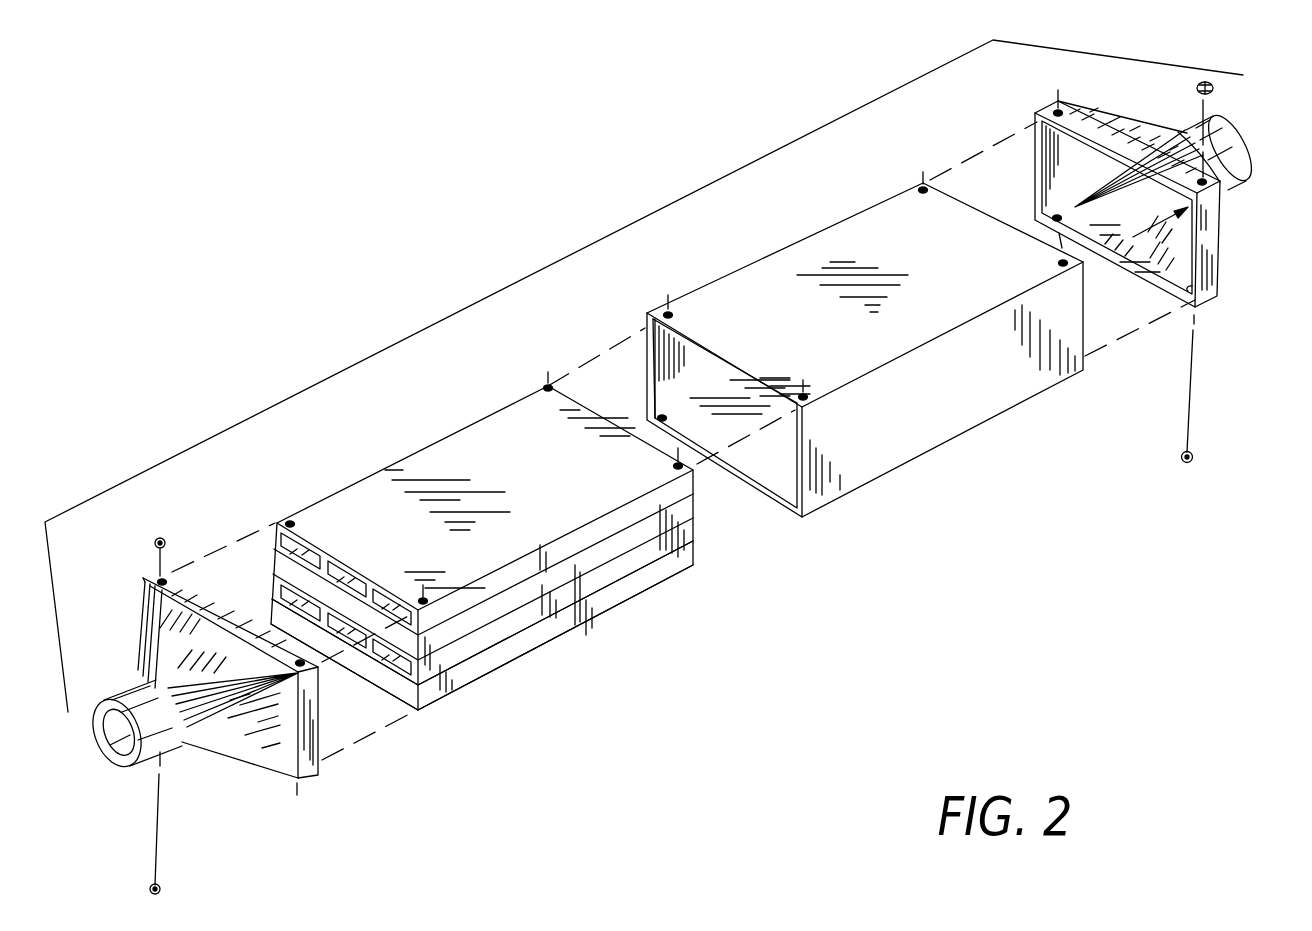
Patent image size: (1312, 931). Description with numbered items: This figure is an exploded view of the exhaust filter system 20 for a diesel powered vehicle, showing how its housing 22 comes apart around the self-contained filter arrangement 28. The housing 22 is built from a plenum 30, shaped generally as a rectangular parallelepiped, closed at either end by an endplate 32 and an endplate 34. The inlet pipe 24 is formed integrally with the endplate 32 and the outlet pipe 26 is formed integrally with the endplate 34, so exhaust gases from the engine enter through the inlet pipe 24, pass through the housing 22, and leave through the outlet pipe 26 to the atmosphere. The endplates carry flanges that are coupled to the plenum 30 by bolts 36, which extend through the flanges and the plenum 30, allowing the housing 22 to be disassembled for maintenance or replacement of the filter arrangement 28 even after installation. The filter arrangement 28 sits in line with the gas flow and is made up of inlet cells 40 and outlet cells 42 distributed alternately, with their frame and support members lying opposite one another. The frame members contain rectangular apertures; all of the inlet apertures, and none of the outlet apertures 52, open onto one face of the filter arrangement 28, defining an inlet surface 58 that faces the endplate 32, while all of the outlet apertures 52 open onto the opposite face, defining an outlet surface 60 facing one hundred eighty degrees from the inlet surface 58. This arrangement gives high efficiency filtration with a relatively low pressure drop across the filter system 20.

The exhaust filter system 20 is at (482, 304).
The housing 22 is at (895, 538).
The inlet pipe 24 is at (127, 698).
The outlet pipe 26 is at (1238, 165).
The self-contained filter arrangement 28 is at (482, 583).
The plenum 30 is at (973, 424).
The endplate 32 is at (198, 707).
The endplate 34 is at (1163, 272).
The bolt 36 is at (162, 881).
The inlet cell 40 is at (298, 542).
The outlet cell 42 is at (420, 714).
The outlet aperture 52 is at (700, 512).
The inlet surface 58 is at (372, 688).
The outlet surface 60 is at (583, 394).